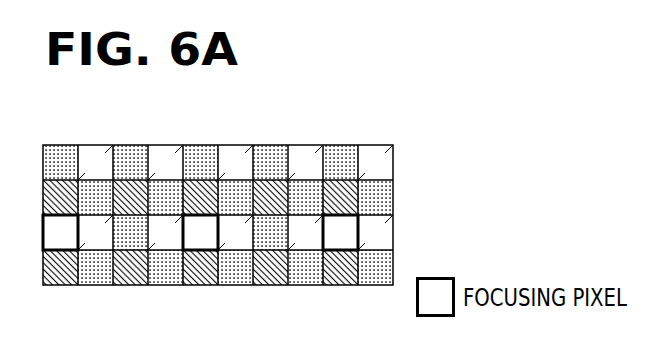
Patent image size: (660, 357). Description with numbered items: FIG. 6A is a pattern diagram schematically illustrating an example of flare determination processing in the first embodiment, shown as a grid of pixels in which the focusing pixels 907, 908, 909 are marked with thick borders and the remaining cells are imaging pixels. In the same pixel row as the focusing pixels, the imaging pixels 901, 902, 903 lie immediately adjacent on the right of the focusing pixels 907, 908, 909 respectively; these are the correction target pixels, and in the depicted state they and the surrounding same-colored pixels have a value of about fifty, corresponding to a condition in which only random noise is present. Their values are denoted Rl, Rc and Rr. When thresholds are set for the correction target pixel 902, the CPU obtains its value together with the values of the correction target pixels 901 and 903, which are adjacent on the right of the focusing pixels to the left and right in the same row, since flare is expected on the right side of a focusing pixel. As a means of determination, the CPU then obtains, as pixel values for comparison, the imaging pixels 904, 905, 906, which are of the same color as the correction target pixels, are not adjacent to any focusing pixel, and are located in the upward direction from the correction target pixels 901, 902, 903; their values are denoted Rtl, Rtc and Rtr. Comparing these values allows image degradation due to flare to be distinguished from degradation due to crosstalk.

The correction target pixel 901 is at (102, 218).
The correction target pixel 902 is at (242, 217).
The correction target pixel 903 is at (393, 229).
The imaging pixel for comparison 904 is at (98, 145).
The imaging pixel for comparison 905 is at (237, 145).
The imaging pixel for comparison 906 is at (375, 145).
The focusing pixel 907 is at (60, 238).
The focusing pixel 908 is at (202, 238).
The focusing pixel 909 is at (342, 238).